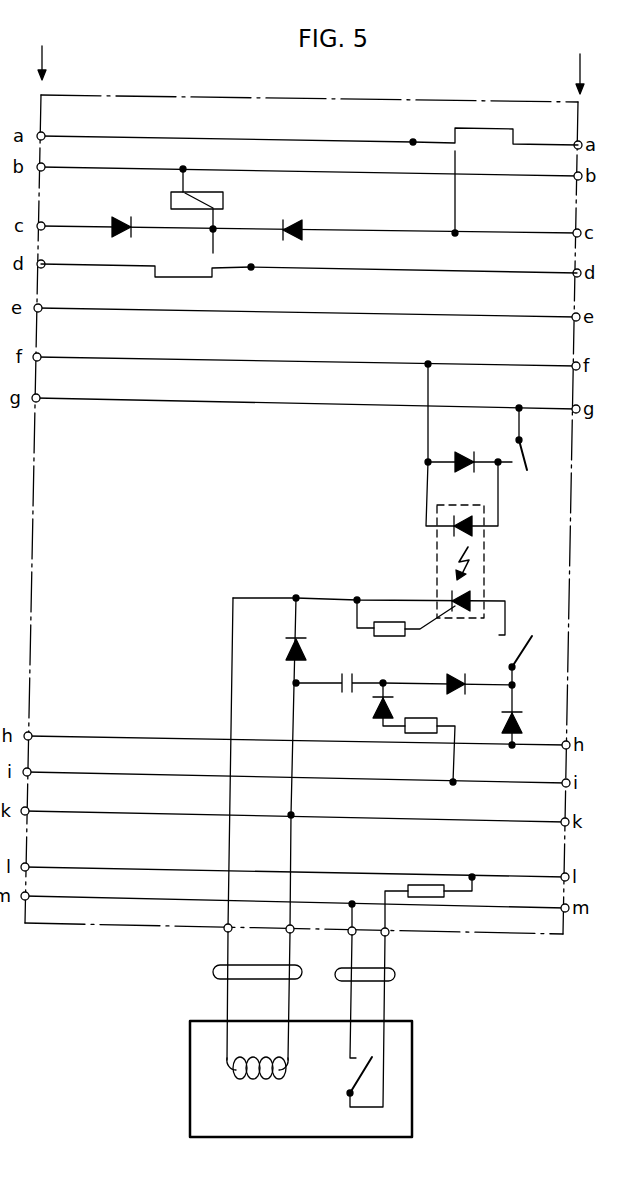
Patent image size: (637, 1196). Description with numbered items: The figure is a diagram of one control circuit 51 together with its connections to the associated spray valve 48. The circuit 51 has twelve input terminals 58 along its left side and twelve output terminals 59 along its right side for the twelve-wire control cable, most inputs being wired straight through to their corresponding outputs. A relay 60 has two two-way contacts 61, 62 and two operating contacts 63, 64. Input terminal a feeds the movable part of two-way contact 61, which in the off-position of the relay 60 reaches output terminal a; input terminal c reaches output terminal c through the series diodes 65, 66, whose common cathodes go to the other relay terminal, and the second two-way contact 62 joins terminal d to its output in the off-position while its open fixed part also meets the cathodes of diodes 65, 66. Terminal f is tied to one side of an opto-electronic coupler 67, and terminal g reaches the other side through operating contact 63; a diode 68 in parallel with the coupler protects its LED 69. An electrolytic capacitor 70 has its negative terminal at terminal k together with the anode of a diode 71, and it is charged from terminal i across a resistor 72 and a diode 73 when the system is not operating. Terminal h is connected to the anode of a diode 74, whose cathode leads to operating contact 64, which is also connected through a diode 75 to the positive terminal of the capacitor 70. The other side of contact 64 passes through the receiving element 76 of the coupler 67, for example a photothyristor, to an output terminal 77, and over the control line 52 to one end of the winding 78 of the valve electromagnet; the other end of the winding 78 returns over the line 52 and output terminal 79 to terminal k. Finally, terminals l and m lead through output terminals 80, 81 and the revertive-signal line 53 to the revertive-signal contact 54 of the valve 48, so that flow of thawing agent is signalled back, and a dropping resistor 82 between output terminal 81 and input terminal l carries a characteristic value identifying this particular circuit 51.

The spray valve 48 is at (197, 1087).
The control circuit 51 is at (235, 97).
The control line 52 is at (213, 970).
The revertive-signal line 53 is at (398, 975).
The revertive-signal contact 54 is at (381, 1080).
The input terminals 58 is at (45, 52).
The output terminals 59 is at (583, 62).
The relay 60 is at (223, 200).
The two-way contact 61 is at (437, 140).
The two-way contact 62 is at (230, 269).
The operating contact 63 is at (527, 455).
The operating contact 64 is at (531, 654).
The diode 65 is at (120, 218).
The diode 66 is at (305, 222).
The opto-electronic coupler 67 is at (437, 575).
The diode 68 is at (462, 458).
The LED 69 is at (472, 532).
The electrolytic capacitor 70 is at (342, 691).
The diode 71 is at (285, 650).
The resistor 72 is at (424, 734).
The diode 73 is at (378, 714).
The diode 74 is at (522, 722).
The diode 75 is at (454, 679).
The receiving element 76 is at (458, 604).
The output terminal 77 is at (225, 933).
The winding 78 is at (257, 1079).
The output terminal 79 is at (287, 933).
The output terminal 80 is at (350, 936).
The output terminal 81 is at (390, 937).
The dropping resistor 82 is at (430, 885).